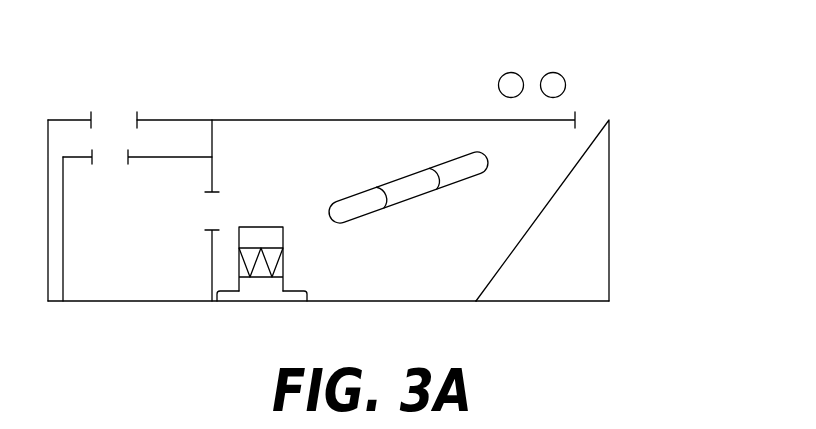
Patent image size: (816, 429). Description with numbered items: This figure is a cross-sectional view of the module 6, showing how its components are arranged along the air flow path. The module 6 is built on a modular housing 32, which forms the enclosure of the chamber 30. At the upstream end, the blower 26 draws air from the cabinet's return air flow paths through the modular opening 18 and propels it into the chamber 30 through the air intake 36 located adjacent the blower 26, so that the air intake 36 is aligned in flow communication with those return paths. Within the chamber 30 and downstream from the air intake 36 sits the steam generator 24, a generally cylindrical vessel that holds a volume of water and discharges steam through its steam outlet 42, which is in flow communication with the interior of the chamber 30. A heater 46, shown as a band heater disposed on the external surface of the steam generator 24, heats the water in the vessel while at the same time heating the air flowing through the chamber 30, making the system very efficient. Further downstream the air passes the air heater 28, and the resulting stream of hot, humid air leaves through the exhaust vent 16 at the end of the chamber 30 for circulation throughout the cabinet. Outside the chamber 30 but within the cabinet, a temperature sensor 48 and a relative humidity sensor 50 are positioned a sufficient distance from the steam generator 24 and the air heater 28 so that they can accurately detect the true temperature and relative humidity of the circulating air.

The module 6 is at (632, 218).
The exhaust vent 16 is at (593, 118).
The modular opening 18 is at (115, 125).
The steam generator 24 is at (273, 291).
The blower 26 is at (97, 282).
The air heater 28 is at (388, 184).
The chamber 30 is at (402, 280).
The modular housing 32 is at (562, 301).
The air intake 36 is at (213, 210).
The steam outlet 42 is at (267, 226).
The heater 46 is at (239, 263).
The temperature sensor 48 is at (511, 72).
The relative humidity sensor 50 is at (553, 72).